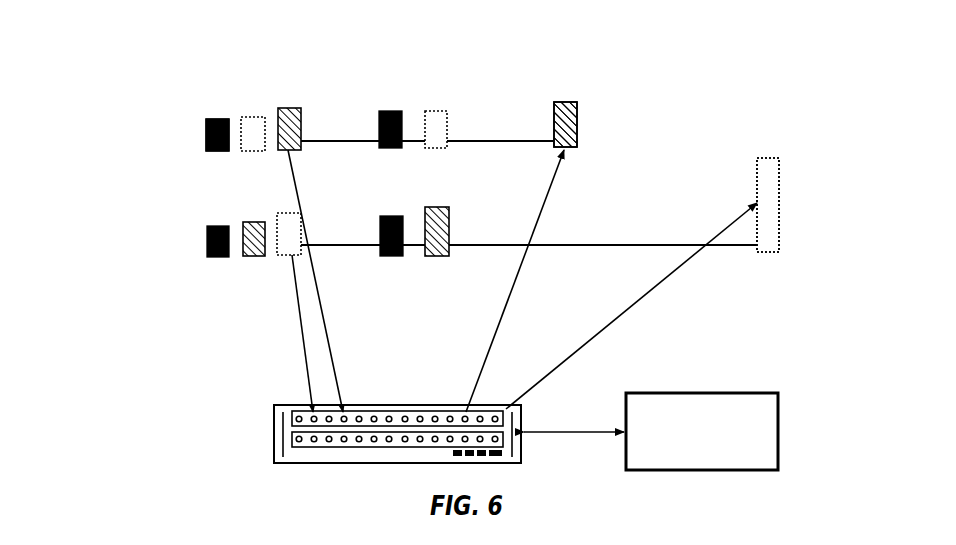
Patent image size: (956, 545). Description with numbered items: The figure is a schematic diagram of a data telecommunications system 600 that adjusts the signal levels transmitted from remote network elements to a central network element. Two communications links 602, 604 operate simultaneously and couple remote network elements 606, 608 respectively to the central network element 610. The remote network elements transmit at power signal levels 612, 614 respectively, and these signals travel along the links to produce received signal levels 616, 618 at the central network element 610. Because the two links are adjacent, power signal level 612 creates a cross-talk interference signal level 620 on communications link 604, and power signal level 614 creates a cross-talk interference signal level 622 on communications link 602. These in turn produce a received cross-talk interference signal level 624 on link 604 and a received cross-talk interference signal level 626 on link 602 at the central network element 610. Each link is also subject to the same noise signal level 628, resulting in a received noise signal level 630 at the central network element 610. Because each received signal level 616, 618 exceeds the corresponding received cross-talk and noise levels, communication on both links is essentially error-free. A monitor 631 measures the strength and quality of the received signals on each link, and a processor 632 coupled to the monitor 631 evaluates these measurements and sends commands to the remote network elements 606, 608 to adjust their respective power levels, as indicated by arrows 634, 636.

The data telecommunications system 600 is at (100, 424).
The communications link 602 is at (490, 138).
The communications link 604 is at (628, 243).
The remote network element 606 is at (562, 75).
The remote network element 608 is at (764, 130).
The central network element 610 is at (215, 100).
The power signal level 612 is at (578, 127).
The power signal level 614 is at (780, 215).
The received signal level 616 is at (301, 108).
The received signal level 618 is at (292, 213).
The cross-talk interference signal level 620 is at (440, 207).
The cross-talk interference signal level 622 is at (440, 111).
The received cross-talk interference signal level 624 is at (258, 256).
The received cross-talk interference signal level 626 is at (250, 117).
The noise signal level 628 is at (392, 111).
The received noise signal level 630 is at (206, 138).
The monitor 631 is at (401, 405).
The processor 632 is at (700, 393).
The arrow 634 is at (521, 273).
The arrow 636 is at (617, 318).